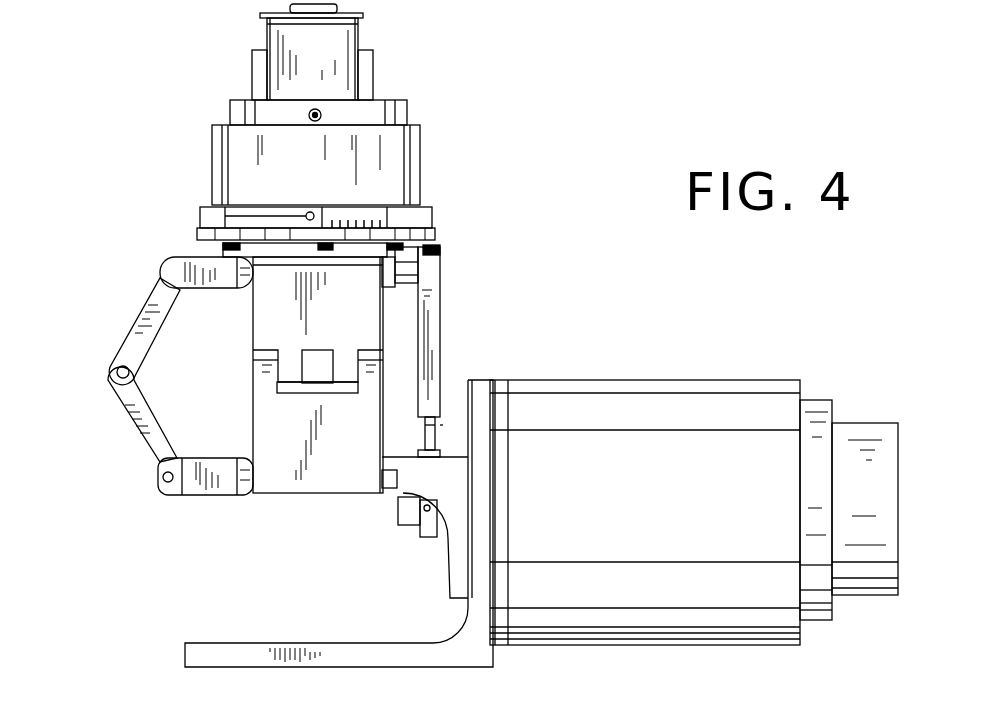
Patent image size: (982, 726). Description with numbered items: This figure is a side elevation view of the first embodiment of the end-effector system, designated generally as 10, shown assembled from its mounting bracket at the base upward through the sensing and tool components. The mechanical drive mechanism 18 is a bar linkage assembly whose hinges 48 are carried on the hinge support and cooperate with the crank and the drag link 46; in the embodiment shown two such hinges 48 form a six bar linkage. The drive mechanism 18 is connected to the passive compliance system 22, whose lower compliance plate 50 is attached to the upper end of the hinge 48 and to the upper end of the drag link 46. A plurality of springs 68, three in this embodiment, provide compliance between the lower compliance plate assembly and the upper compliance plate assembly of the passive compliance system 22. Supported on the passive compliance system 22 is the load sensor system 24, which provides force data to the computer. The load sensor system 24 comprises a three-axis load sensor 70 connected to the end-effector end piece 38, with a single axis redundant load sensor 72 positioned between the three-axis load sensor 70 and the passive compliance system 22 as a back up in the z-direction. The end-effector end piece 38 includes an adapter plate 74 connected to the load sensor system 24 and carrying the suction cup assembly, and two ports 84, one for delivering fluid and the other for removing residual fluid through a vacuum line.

The apparatus / base bracket 10 is at (140, 614).
The mechanical drive mechanism 18 is at (112, 346).
The passive compliance system 22 is at (447, 233).
The load sensor system 24 is at (428, 138).
The end-effector end piece 38 is at (370, 52).
The drag link 46 is at (441, 318).
The hinge 48 is at (140, 307).
The lower compliance plate 50 is at (172, 257).
The spring 68 is at (232, 248).
The three-axis load sensor 70 is at (420, 178).
The single axis redundant load sensor 72 is at (433, 213).
The adapter plate 74 is at (407, 113).
The port 84 is at (252, 76).